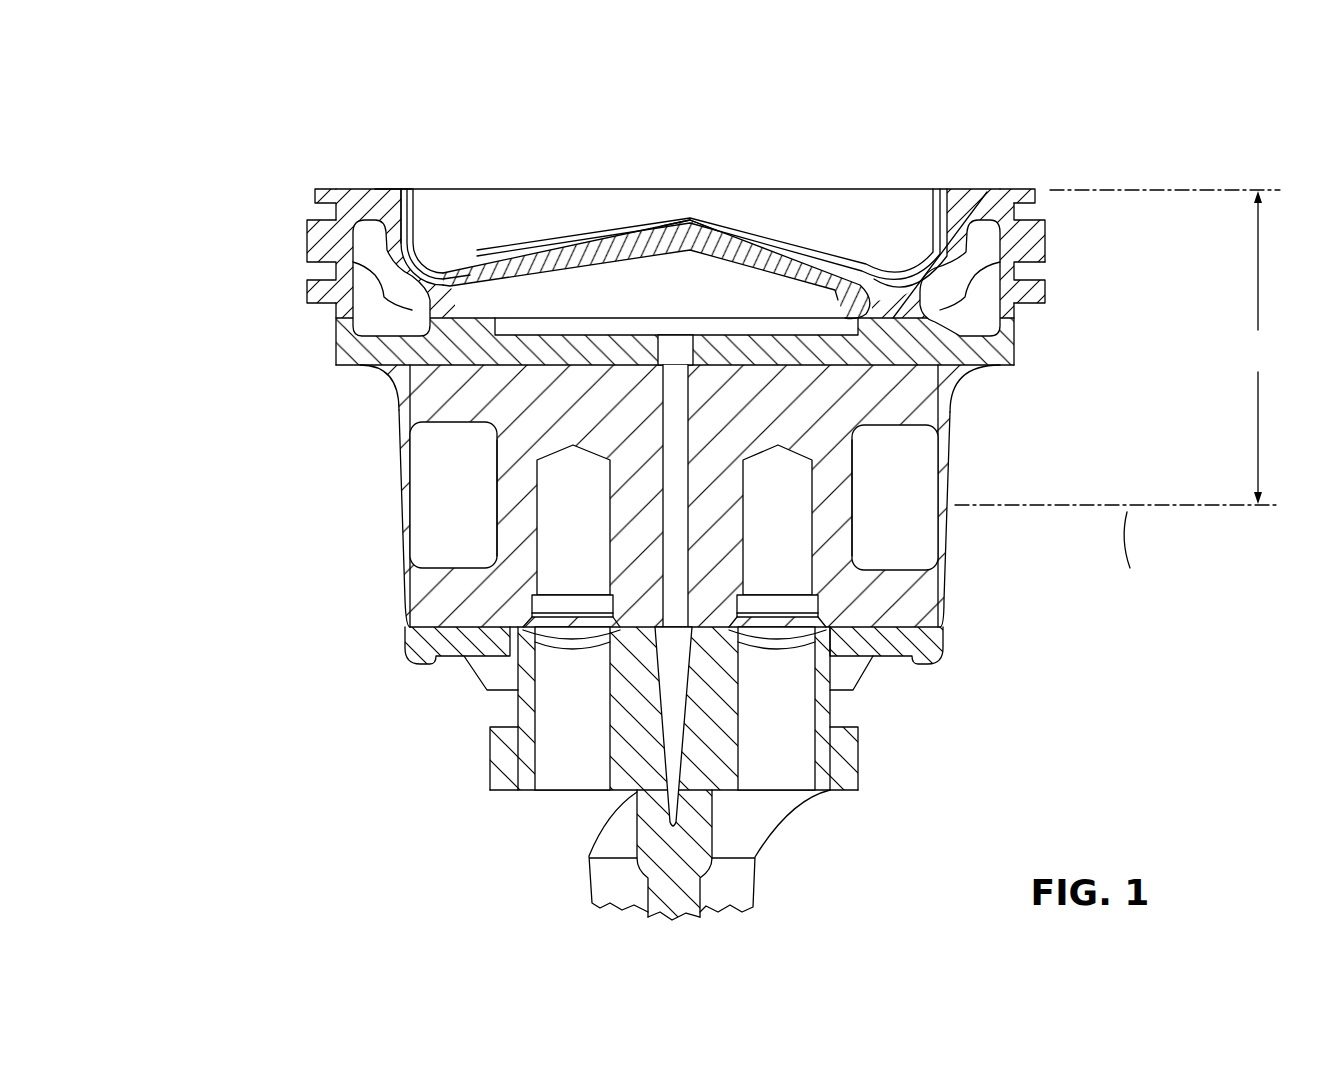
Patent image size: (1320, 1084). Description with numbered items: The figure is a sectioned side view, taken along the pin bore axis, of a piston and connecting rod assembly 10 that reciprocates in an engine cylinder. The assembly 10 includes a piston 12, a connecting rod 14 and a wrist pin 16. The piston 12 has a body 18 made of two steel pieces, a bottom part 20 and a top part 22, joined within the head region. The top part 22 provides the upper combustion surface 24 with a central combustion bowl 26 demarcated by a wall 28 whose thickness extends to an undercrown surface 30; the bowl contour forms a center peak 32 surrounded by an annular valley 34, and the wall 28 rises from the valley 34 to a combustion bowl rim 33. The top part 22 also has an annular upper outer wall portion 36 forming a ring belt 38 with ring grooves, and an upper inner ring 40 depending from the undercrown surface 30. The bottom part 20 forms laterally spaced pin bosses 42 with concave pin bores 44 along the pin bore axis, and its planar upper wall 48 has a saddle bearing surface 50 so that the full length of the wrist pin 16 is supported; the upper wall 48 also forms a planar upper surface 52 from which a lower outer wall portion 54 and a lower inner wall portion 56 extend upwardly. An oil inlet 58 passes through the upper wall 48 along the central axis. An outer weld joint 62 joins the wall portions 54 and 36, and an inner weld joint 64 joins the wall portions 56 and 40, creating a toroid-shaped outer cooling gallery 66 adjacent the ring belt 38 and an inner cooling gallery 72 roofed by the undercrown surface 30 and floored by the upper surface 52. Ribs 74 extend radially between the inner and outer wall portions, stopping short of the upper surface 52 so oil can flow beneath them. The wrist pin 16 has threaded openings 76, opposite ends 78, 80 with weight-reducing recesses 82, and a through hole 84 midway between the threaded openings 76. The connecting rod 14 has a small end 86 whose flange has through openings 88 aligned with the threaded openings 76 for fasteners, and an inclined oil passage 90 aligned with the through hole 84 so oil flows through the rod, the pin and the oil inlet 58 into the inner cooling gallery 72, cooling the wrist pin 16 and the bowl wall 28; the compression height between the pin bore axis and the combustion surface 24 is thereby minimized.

The piston and connecting rod assembly 10 is at (166, 216).
The piston 12 is at (684, 228).
The connecting rod 14 is at (664, 773).
The wrist pin 16 is at (678, 551).
The body 18 is at (699, 338).
The bottom part 20 is at (337, 356).
The top part 22 is at (316, 191).
The upper combustion surface 24 is at (394, 187).
The combustion bowl 26 is at (674, 232).
The wall 28 is at (521, 260).
The undercrown surface 30 is at (598, 262).
The center peak 32 is at (679, 216).
The combustion bowl rim 33 is at (431, 187).
The annular valley 34 is at (916, 256).
The upper outer wall portion 36 is at (1047, 230).
The ring belt 38 is at (273, 196).
The upper inner ring 40 is at (441, 305).
The pin bosses 42 is at (424, 664).
The pin bores 44 is at (410, 644).
The upper wall 48 is at (478, 400).
The saddle bearing surface 50 is at (834, 368).
The upper surface 52 is at (737, 330).
The lower outer wall portion 54 is at (335, 306).
The lower inner wall portion 56 is at (866, 335).
The oil inlet 58 is at (678, 338).
The outer weld joint 62 is at (1047, 274).
The inner weld joint 64 is at (476, 300).
The outer cooling gallery 66 is at (988, 188).
The inner cooling gallery 72 is at (639, 228).
The ribs 74 is at (652, 293).
The threaded openings 76 is at (540, 498).
The end 78 is at (952, 410).
The end 80 is at (406, 592).
The recesses 82 is at (494, 535).
The through hole 84 is at (675, 554).
The small end 86 is at (490, 750).
The through openings 88 is at (545, 775).
The oil passage 90 is at (672, 764).